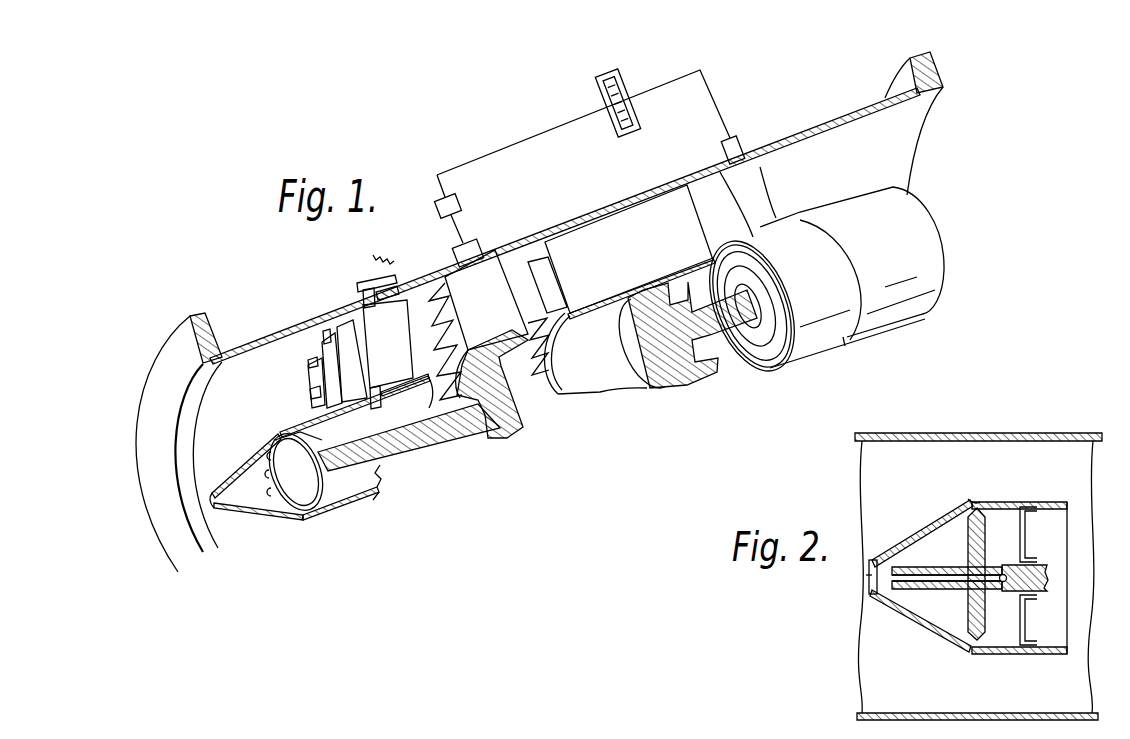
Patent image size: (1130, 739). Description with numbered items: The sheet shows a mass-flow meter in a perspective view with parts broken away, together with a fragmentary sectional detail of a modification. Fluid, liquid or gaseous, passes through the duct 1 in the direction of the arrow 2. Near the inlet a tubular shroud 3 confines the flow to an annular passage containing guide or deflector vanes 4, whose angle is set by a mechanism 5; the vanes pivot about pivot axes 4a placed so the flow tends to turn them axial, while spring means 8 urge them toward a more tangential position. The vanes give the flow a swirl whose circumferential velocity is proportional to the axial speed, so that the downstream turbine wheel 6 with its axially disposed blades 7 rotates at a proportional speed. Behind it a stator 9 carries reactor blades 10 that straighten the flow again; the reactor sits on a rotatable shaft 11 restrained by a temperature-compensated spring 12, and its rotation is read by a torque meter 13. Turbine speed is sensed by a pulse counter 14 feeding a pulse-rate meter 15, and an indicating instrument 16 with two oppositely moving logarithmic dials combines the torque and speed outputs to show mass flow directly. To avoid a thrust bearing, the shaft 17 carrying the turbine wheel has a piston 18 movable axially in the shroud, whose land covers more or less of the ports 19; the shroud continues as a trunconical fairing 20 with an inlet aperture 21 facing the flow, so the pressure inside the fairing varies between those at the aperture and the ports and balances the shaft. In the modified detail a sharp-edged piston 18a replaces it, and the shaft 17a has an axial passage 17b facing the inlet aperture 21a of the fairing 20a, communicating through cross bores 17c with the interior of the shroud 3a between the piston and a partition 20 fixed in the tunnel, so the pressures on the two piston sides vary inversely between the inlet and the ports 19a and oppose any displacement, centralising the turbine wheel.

In FIG. 1, the duct 1 is at (305, 323).
In FIG. 2, the duct 1 is at (905, 433).
In FIG. 1, the arrow indicating flow direction 2 is at (162, 522).
In FIG. 1, the tubular shroud 3 is at (303, 425).
In FIG. 2, the shroud 3a is at (1060, 502).
In FIG. 1, the guide or deflector vanes 4 is at (390, 357).
In FIG. 1, the pivot axes 4a is at (360, 298).
In FIG. 1, the adjusting mechanism 5 is at (392, 280).
In FIG. 1, the turbine wheel 6 is at (522, 413).
In FIG. 1, the turbine blades 7 is at (492, 315).
In FIG. 1, the spring means 8 is at (382, 247).
In FIG. 1, the stator (reactor) 9 is at (560, 356).
In FIG. 1, the reactor blades 10 is at (643, 255).
In FIG. 1, the shaft 11 is at (713, 347).
In FIG. 1, the temperature-compensated spring 12 is at (765, 365).
In FIG. 1, the torque meter 13 is at (737, 138).
In FIG. 1, the pulse counter 14 is at (478, 248).
In FIG. 1, the pulse-rate meter 15 is at (460, 205).
In FIG. 1, the indicating instrument 16 is at (597, 93).
In FIG. 1, the shaft 17 is at (432, 440).
In FIG. 2, the shaft 17a is at (923, 590).
In FIG. 2, the axial passage 17b is at (916, 560).
In FIG. 2, the cross bores 17c is at (1003, 573).
In FIG. 1, the piston 18 is at (306, 432).
In FIG. 2, the sharp-edged piston 18a is at (970, 540).
In FIG. 1, the ports 19 is at (281, 436).
In FIG. 2, the ports 19a is at (983, 500).
In FIG. 1, the trunconical fairing / partition 20 is at (250, 470).
In FIG. 2, the trunconical fairing / partition 20 is at (1027, 535).
In FIG. 2, the fairing 20a is at (960, 511).
In FIG. 1, the inlet aperture 21 is at (234, 474).
In FIG. 2, the inlet aperture 21a is at (866, 580).